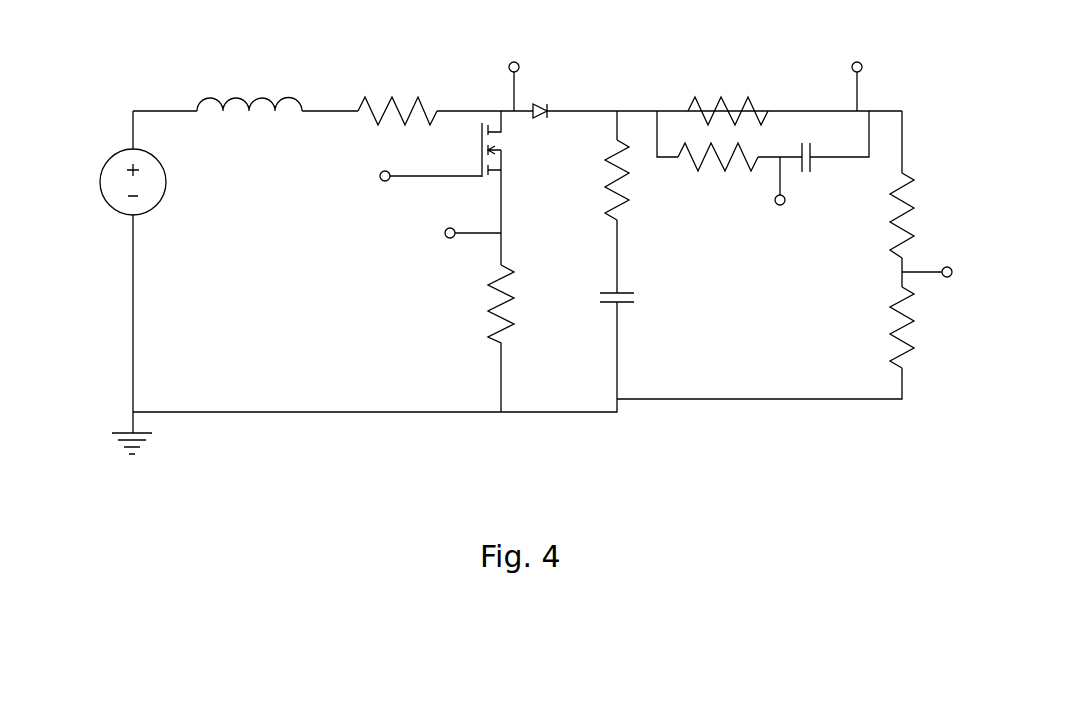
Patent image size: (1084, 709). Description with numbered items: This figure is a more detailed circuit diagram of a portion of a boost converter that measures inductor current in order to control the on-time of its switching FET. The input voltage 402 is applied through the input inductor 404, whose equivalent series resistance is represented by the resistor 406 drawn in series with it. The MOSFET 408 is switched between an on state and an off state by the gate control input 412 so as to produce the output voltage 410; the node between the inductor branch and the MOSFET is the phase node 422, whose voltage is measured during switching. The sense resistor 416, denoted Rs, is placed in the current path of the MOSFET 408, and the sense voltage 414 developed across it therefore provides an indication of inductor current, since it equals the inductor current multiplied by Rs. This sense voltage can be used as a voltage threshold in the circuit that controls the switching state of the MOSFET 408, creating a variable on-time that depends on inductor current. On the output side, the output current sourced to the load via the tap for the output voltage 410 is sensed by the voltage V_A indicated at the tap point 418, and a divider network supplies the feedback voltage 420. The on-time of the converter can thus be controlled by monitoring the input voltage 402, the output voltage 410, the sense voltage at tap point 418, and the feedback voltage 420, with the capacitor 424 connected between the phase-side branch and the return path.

The input voltage 402 is at (102, 165).
The input inductor 404 is at (237, 98).
The resistor 406 is at (381, 104).
The MOSFET 408 is at (493, 130).
The output voltage 410 is at (857, 92).
The gate control input 412 is at (395, 172).
The sense voltage 414 is at (445, 233).
The sense resistor 416 is at (493, 328).
The tap point 418 is at (773, 189).
The feedback voltage 420 is at (927, 277).
The phase node 422 is at (517, 92).
The output capacitor 424 is at (630, 293).